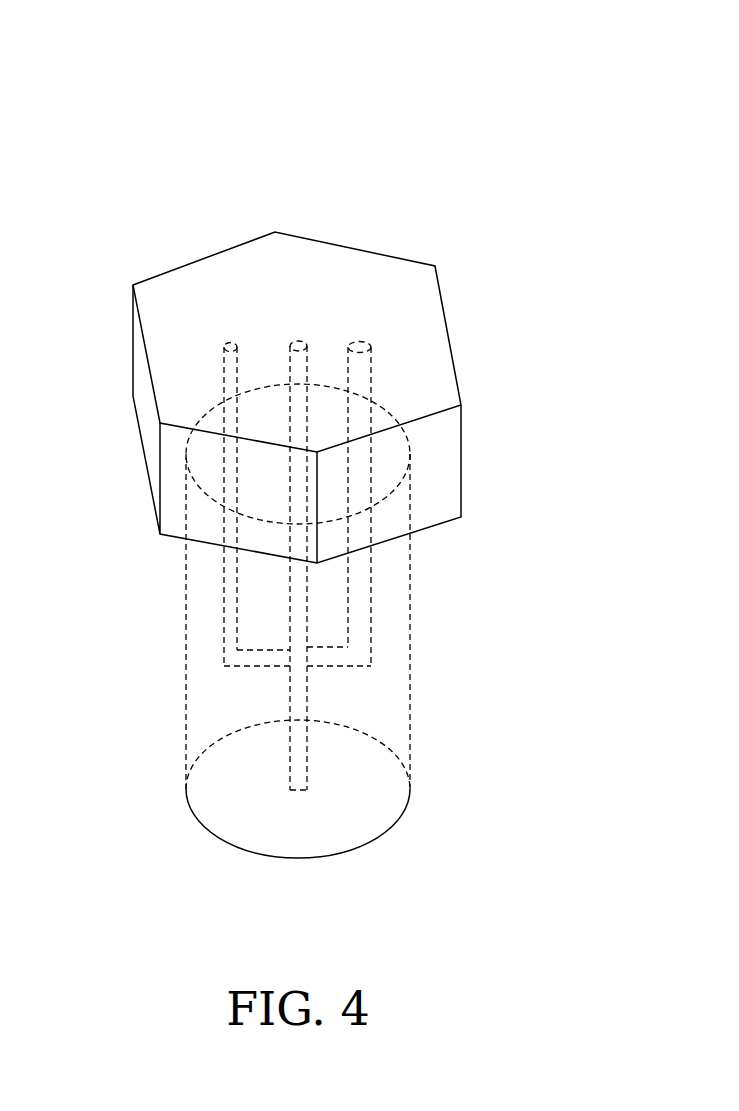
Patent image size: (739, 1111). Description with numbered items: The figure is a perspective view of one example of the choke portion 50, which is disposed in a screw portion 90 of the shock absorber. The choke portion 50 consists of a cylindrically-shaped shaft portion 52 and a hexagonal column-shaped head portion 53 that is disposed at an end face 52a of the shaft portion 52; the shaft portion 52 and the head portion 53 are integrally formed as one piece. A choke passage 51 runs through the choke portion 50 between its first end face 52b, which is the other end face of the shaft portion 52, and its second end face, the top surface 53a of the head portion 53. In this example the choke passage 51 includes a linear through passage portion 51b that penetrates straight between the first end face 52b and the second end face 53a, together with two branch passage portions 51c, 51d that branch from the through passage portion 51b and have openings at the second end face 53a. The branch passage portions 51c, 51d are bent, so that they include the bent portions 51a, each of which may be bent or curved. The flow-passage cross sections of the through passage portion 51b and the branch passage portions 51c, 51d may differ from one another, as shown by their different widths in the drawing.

The screw portion 90 is at (157, 119).
The choke portion 50 is at (350, 311).
The choke passage 51 is at (292, 793).
The bent portion 51a is at (226, 662).
The through passage portion 51b is at (287, 367).
The branch passage portion 51c is at (223, 575).
The branch passage portion 51d is at (372, 620).
The shaft portion 52 is at (400, 738).
The end face 52a is at (395, 465).
The first end face 52b is at (385, 834).
The head portion 53 is at (142, 370).
The top surface 53a is at (420, 343).